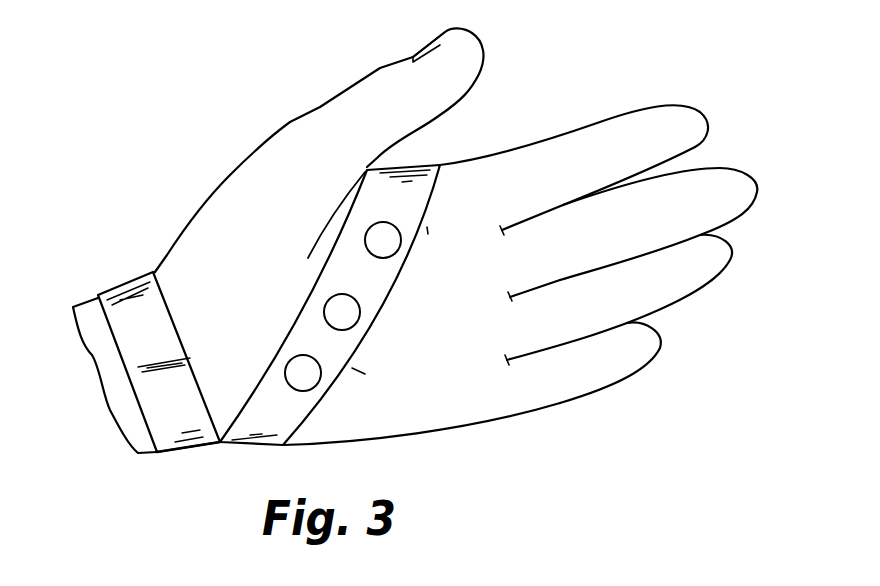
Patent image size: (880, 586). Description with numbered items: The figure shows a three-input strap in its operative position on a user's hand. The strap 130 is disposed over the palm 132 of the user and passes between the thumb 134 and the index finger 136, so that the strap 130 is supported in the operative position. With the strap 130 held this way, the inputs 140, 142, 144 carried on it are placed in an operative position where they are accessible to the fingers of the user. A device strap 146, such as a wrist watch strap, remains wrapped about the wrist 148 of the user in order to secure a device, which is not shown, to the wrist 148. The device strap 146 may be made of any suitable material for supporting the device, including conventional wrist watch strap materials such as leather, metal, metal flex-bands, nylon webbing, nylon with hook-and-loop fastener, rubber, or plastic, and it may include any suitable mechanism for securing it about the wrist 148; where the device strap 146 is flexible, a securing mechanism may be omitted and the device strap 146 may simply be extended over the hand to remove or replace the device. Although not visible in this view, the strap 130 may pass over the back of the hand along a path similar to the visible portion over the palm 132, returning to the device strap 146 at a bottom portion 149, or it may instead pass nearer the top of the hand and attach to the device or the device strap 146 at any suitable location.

The strap 130 is at (439, 160).
The palm 132 is at (443, 405).
The thumb 134 is at (485, 48).
The index finger 136 is at (705, 120).
The input 140 is at (401, 238).
The input 142 is at (362, 313).
The input 144 is at (296, 357).
The device strap 146 is at (133, 277).
The wrist 148 is at (98, 298).
The bottom portion 149 is at (185, 450).